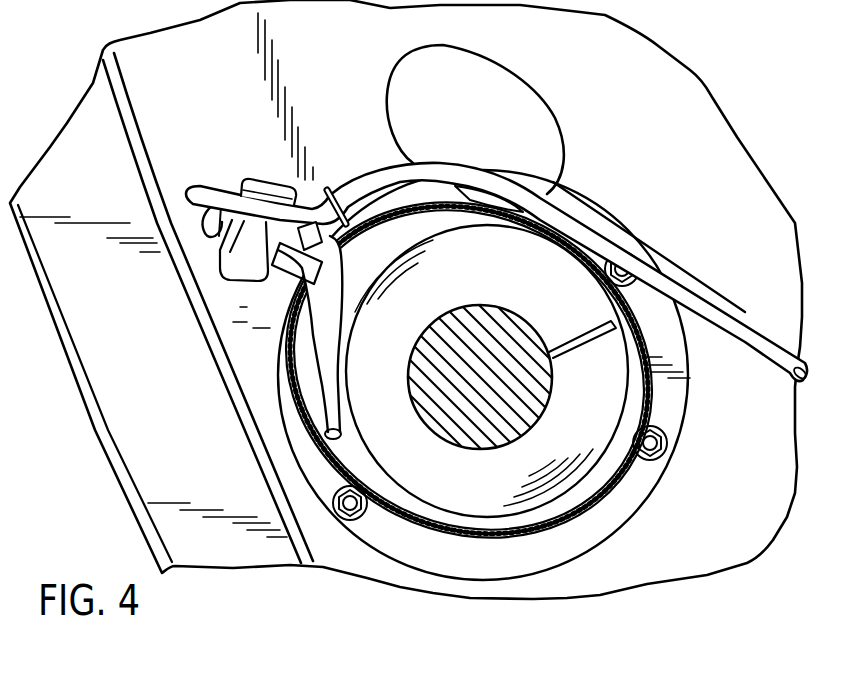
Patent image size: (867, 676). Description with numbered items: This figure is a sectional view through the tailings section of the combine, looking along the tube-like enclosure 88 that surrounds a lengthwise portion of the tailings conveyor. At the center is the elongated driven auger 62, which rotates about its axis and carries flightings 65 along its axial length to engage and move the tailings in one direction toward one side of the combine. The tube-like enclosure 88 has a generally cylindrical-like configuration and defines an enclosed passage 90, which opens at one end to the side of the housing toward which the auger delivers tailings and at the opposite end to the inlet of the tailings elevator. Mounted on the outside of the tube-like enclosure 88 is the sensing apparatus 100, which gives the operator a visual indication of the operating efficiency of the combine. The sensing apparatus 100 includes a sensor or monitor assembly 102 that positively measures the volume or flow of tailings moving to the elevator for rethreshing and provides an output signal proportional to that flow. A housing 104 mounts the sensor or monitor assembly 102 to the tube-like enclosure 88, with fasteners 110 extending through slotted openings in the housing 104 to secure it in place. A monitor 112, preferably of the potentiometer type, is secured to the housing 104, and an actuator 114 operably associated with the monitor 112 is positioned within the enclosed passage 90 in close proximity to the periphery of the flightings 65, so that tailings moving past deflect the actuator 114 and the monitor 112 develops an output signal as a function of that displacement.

The auger 62 is at (372, 240).
The flightings 65 is at (535, 250).
The tube-like enclosure 88 is at (306, 447).
The enclosed passage 90 is at (603, 463).
The sensing apparatus 100 is at (228, 160).
The sensor or monitor assembly 102 is at (270, 165).
The housing 104 is at (278, 283).
The fasteners 110 is at (300, 240).
The monitor 112 is at (235, 258).
The actuator 114 is at (332, 387).